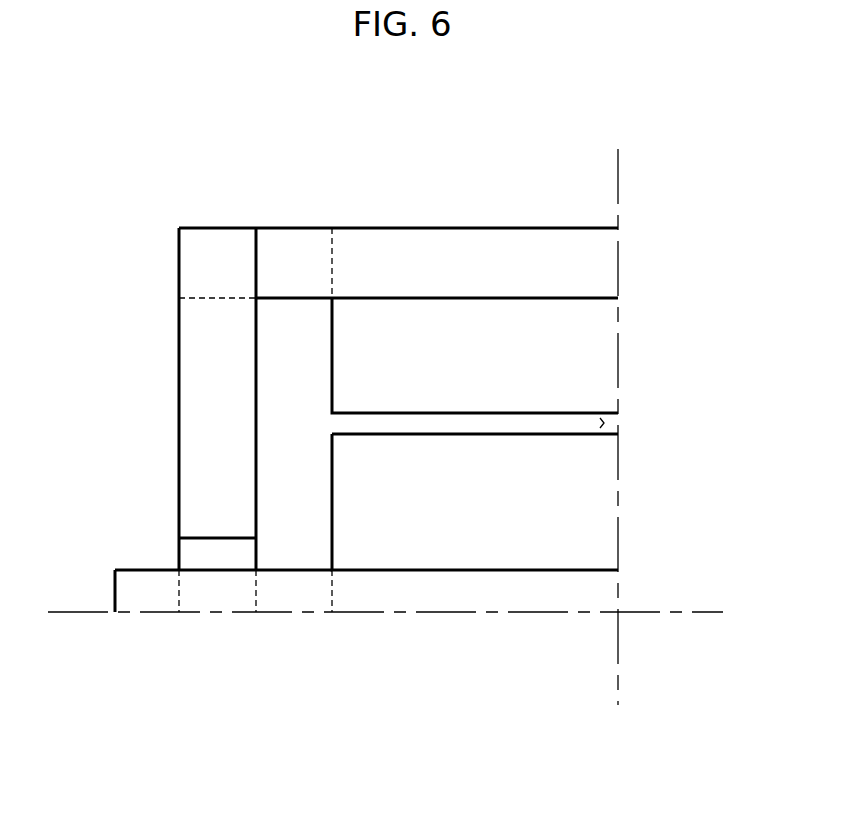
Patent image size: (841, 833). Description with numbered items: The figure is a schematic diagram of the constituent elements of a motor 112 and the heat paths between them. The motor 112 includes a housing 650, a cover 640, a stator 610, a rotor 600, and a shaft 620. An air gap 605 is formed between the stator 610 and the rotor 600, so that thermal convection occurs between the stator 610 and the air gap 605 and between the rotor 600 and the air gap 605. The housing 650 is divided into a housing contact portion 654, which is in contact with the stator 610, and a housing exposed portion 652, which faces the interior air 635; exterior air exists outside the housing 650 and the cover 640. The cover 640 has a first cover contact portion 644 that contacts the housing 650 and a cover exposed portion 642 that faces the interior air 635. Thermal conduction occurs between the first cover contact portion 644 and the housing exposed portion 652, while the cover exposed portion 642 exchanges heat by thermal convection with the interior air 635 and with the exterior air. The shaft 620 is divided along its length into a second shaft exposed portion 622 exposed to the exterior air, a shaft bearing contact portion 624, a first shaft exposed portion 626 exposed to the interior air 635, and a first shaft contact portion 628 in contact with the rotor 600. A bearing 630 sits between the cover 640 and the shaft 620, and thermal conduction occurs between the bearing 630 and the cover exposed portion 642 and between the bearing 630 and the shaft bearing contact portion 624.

The motor 112 is at (517, 657).
The rotor 600 is at (590, 515).
The air gap 605 is at (604, 426).
The stator 610 is at (590, 355).
The shaft 620 is at (128, 671).
The second shaft exposed portion 622 is at (145, 593).
The shaft bearing contact portion 624 is at (218, 593).
The first shaft exposed portion 626 is at (296, 593).
The first shaft contact portion 628 is at (399, 593).
The bearing 630 is at (193, 553).
The interior air 635 is at (288, 449).
The cover 640 is at (100, 252).
The cover exposed portion 642 is at (203, 374).
The first cover contact portion 644 is at (203, 263).
The housing 650 is at (429, 160).
The housing exposed portion 652 is at (294, 258).
The housing contact portion 654 is at (412, 258).